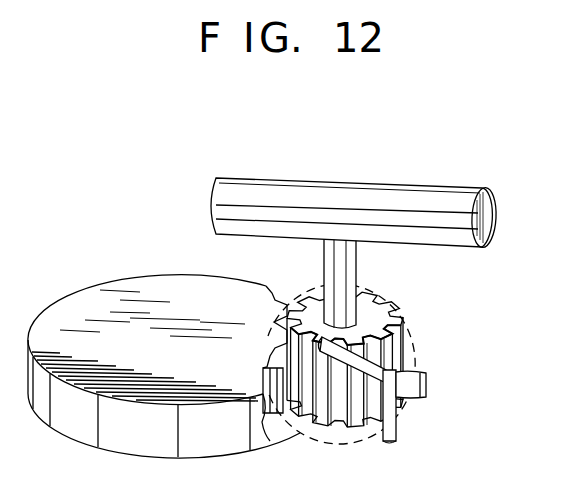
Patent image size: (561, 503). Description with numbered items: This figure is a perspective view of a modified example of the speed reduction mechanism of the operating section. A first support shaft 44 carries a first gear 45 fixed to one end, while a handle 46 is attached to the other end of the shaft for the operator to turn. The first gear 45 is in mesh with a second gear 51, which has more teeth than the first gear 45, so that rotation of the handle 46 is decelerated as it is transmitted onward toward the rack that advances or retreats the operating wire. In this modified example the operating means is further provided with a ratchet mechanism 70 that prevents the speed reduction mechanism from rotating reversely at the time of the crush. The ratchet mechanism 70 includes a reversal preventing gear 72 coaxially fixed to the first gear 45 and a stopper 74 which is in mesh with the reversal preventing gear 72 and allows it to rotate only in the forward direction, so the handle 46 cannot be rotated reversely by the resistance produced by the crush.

The first support shaft 44 is at (358, 268).
The first gear 45 is at (325, 420).
The handle 46 is at (400, 186).
The second gear 51 is at (258, 305).
The ratchet mechanism 70 is at (434, 360).
The reversal preventing gear 72 is at (384, 301).
The stopper 74 is at (414, 399).